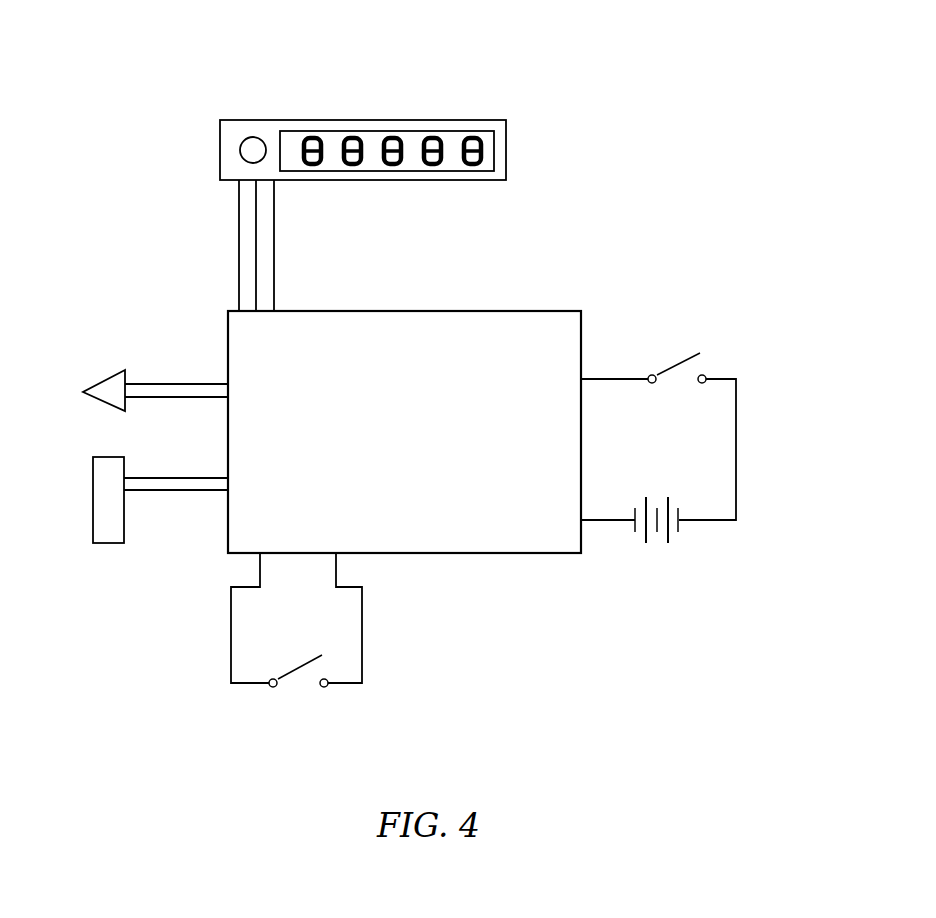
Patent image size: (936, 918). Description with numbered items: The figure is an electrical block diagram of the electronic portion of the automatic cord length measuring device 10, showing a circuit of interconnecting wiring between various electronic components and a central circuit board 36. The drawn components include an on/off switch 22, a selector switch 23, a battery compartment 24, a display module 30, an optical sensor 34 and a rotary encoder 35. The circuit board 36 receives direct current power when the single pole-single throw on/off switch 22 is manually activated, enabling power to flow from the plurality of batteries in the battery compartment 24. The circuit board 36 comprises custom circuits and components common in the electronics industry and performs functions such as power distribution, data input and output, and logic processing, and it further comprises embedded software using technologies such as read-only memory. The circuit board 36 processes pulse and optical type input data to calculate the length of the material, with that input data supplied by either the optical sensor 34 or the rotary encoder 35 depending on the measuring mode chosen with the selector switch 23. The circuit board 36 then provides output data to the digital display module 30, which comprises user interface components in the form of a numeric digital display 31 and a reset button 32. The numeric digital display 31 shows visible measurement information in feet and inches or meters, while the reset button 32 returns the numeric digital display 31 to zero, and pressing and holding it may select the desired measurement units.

The automatic cord length measuring device 10 is at (848, 174).
The on/off switch 22 is at (690, 372).
The selector switch 23 is at (309, 673).
The battery compartment 24 is at (672, 543).
The display module 30 is at (405, 120).
The numeric digital display 31 is at (494, 146).
The reset button 32 is at (258, 146).
The optical sensor 34 is at (100, 392).
The rotary encoder 35 is at (100, 513).
The circuit board 36 is at (468, 553).